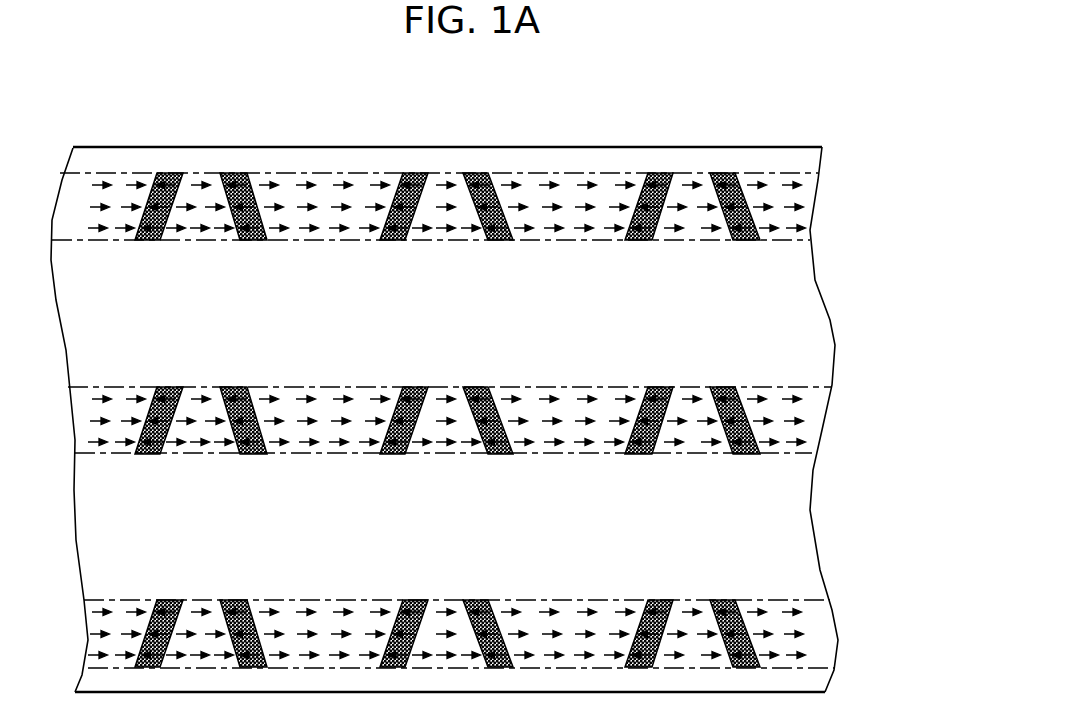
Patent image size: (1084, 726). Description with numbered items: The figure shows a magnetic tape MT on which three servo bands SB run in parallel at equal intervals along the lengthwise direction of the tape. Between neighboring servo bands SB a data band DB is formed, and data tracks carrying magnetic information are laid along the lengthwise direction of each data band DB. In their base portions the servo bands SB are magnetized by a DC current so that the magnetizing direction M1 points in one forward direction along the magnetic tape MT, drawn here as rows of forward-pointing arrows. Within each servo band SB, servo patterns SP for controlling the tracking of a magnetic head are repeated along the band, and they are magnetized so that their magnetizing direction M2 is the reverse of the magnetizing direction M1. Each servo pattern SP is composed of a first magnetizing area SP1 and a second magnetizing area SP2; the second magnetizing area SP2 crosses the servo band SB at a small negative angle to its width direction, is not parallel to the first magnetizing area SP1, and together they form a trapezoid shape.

The magnetic tape MT is at (230, 147).
The data band DB is at (778, 518).
The servo band SB is at (480, 420).
The servo pattern SP is at (411, 420).
The first magnetizing area SP1 is at (160, 242).
The second magnetizing area SP2 is at (237, 242).
The magnetizing direction M1 is at (470, 228).
The magnetizing direction M2 is at (507, 237).